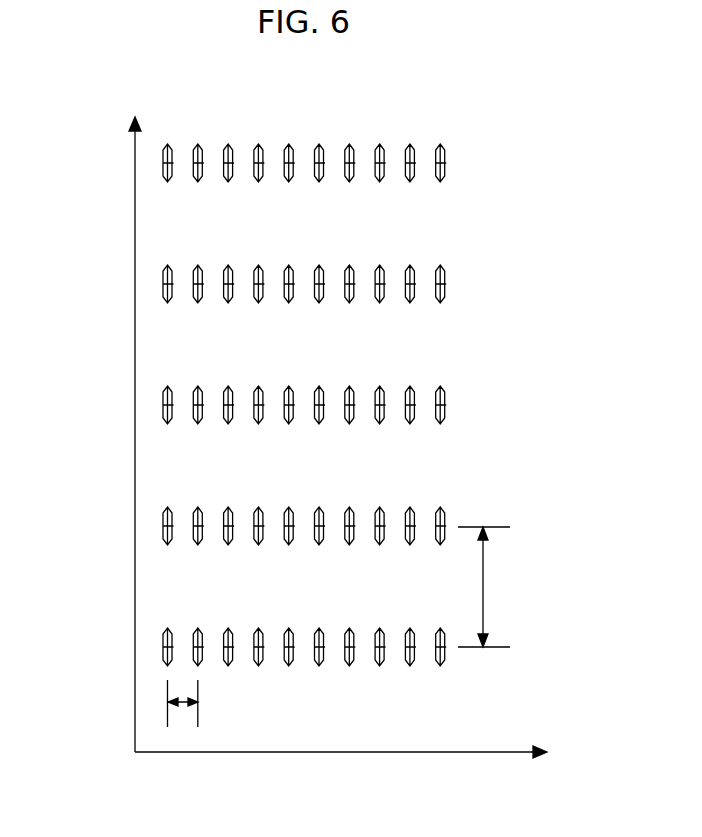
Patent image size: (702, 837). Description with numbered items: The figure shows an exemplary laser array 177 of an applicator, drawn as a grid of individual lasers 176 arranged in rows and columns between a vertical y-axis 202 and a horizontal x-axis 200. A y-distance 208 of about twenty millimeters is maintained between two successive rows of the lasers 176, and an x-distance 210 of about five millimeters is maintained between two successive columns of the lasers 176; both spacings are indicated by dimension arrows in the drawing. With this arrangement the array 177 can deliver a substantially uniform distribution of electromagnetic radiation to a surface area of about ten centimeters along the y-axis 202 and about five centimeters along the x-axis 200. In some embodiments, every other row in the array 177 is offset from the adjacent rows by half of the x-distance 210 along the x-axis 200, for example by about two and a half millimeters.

The laser array 177 is at (486, 163).
The laser 176 is at (440, 300).
The y-axis 202 is at (135, 453).
The x-axis 200 is at (408, 753).
The y-distance 208 is at (504, 587).
The x-distance 210 is at (198, 703).